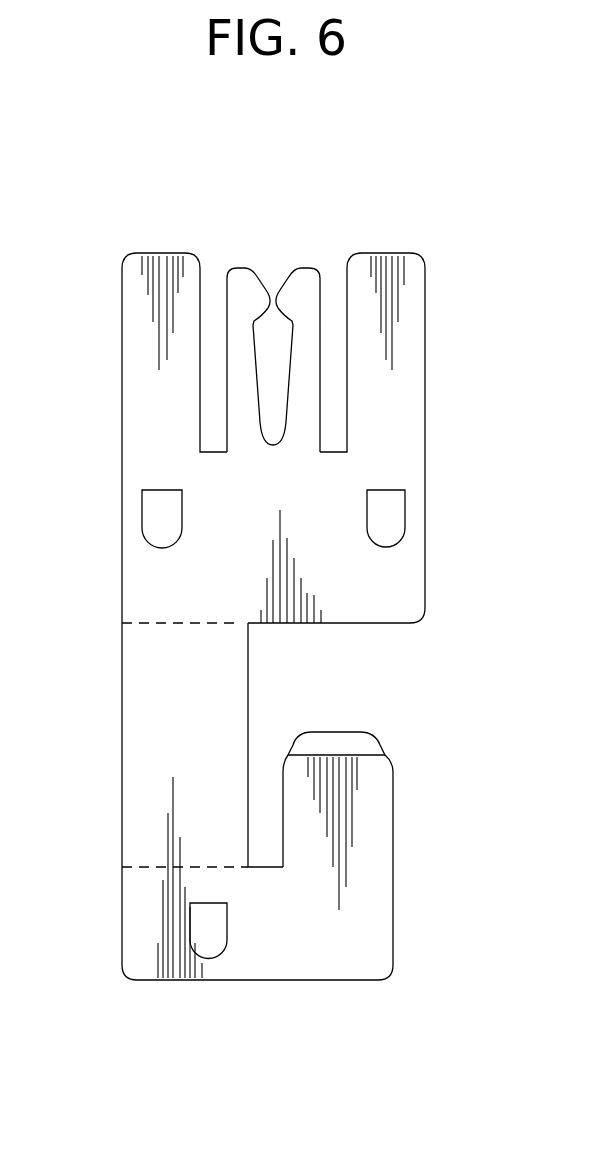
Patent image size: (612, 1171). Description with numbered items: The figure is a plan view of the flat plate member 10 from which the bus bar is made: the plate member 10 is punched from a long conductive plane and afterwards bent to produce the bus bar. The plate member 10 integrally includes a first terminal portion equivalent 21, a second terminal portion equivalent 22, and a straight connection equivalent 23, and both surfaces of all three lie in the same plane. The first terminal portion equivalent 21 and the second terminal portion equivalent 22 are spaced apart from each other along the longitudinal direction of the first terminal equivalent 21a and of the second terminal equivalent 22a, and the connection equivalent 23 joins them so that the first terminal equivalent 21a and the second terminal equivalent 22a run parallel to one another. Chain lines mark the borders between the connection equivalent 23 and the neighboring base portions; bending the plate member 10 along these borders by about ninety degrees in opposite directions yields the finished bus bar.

The plate member 10 is at (249, 212).
The first terminal portion equivalent 21 is at (433, 440).
The first terminal equivalent 21a is at (305, 300).
The second terminal portion equivalent 22 is at (407, 903).
The second terminal equivalent 22a is at (358, 812).
The connection equivalent 23 is at (120, 773).